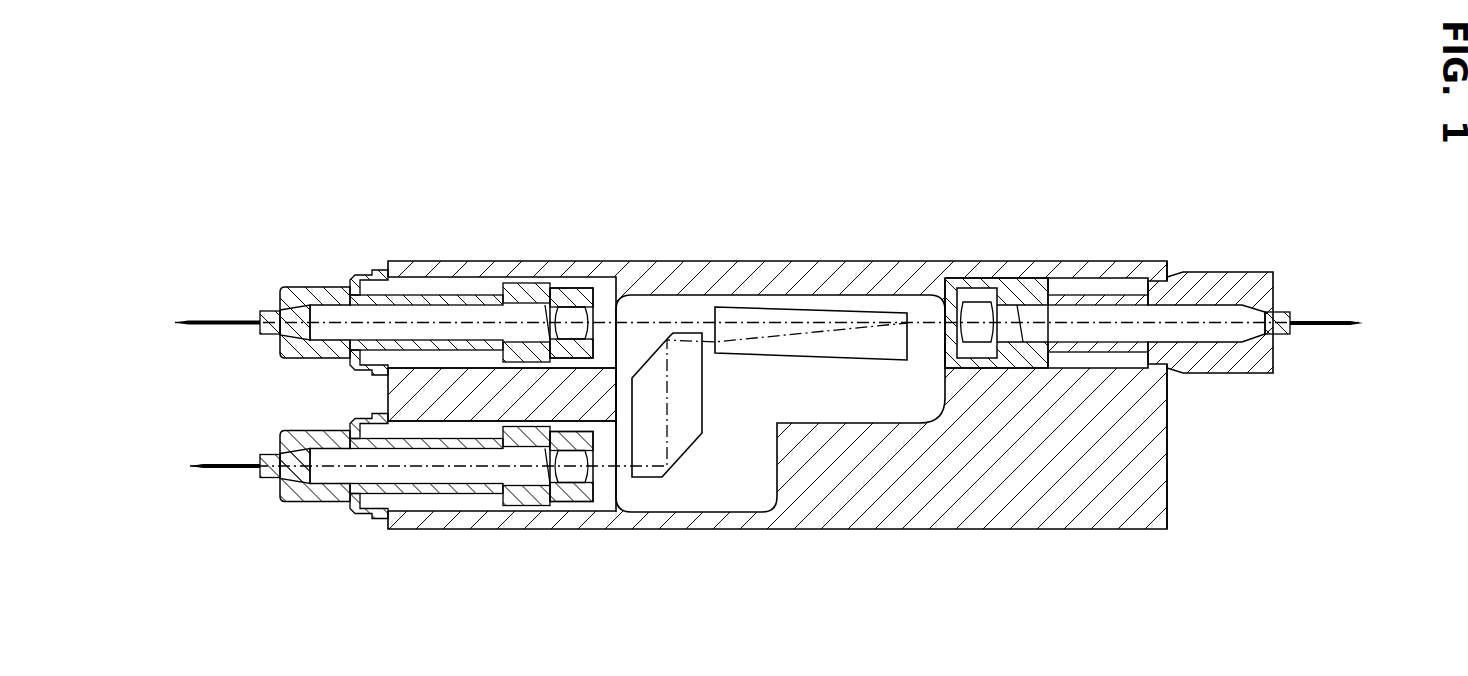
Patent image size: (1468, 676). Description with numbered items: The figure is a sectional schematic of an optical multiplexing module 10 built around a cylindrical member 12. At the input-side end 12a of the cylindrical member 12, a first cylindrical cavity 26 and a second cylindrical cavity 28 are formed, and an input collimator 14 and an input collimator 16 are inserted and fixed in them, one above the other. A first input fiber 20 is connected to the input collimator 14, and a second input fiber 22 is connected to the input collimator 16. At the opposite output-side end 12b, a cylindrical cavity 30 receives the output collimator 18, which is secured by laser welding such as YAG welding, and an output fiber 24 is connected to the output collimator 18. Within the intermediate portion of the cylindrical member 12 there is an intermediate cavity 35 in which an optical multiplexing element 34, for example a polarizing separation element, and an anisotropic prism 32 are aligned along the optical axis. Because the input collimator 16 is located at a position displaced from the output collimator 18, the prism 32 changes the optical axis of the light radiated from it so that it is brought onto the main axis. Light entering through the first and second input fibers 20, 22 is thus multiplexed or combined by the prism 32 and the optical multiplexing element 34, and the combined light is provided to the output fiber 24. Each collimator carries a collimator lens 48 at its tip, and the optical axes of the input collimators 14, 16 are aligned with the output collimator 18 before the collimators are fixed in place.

The optical multiplexing module 10 is at (905, 238).
The cylindrical member 12 is at (757, 442).
The input-side end 12a is at (384, 393).
The output-side end 12b is at (1174, 481).
The input collimator 14 is at (312, 286).
The input collimator 16 is at (308, 503).
The output collimator 18 is at (1221, 375).
The first input fiber 20 is at (218, 318).
The second input fiber 22 is at (220, 470).
The output fiber 24 is at (1318, 334).
The first cylindrical cavity 26 is at (447, 292).
The second cylindrical cavity 28 is at (415, 503).
The cylindrical cavity 30 is at (1083, 287).
The prism 32 is at (643, 480).
The optical multiplexing element 34 is at (832, 306).
The intermediate cavity 35 is at (720, 480).
The collimator lens 48 is at (575, 315).